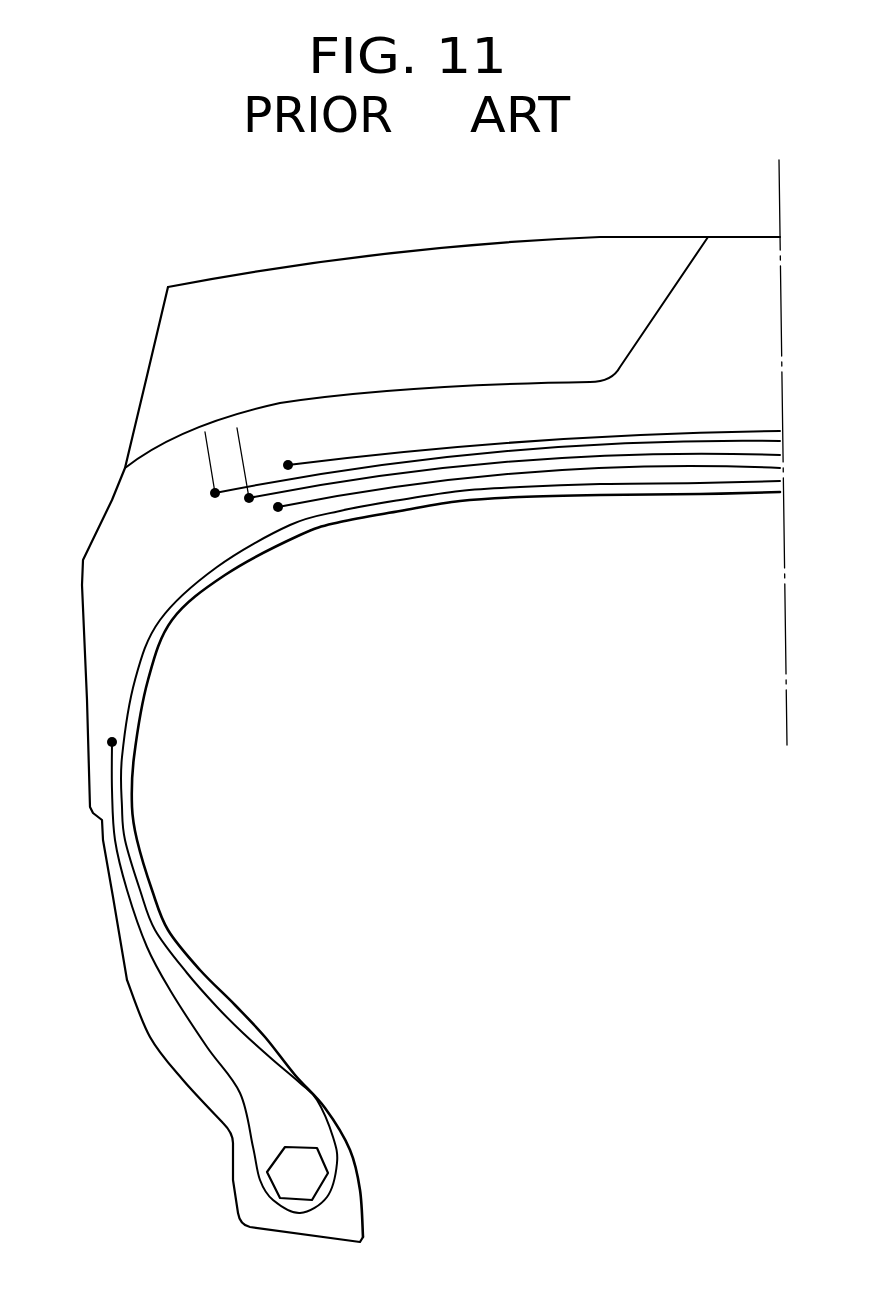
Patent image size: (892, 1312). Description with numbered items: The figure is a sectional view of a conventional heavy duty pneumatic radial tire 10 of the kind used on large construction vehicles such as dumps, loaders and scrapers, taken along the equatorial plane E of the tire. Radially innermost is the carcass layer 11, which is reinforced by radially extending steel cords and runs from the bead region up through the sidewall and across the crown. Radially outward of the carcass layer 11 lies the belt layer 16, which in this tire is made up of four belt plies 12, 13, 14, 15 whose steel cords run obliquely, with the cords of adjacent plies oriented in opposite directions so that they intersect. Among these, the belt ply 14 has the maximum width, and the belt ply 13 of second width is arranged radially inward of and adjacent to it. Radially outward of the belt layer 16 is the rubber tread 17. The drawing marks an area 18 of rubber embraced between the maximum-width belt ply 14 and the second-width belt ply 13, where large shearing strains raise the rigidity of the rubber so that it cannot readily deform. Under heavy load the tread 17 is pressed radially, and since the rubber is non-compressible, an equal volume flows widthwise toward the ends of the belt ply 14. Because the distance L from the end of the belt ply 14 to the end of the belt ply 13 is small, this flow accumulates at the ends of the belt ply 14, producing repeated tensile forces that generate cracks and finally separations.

The heavy duty pneumatic radial tire 10 is at (553, 225).
The carcass layer 11 is at (158, 622).
The belt ply 12 is at (480, 479).
The belt ply having second width 13 is at (566, 460).
The belt ply having maximum width 14 is at (517, 450).
The belt ply 15 is at (450, 444).
The belt layer 16 is at (495, 463).
The tread 17 is at (675, 303).
The area of rubber embraced between belt plies 18 is at (422, 423).
The distance between belt ply ends L is at (177, 453).
The equatorial plane E is at (786, 655).